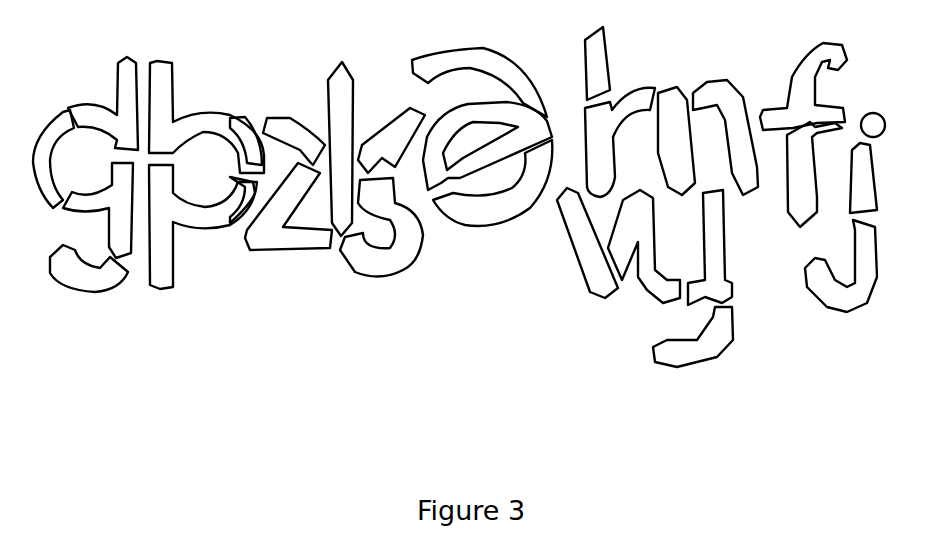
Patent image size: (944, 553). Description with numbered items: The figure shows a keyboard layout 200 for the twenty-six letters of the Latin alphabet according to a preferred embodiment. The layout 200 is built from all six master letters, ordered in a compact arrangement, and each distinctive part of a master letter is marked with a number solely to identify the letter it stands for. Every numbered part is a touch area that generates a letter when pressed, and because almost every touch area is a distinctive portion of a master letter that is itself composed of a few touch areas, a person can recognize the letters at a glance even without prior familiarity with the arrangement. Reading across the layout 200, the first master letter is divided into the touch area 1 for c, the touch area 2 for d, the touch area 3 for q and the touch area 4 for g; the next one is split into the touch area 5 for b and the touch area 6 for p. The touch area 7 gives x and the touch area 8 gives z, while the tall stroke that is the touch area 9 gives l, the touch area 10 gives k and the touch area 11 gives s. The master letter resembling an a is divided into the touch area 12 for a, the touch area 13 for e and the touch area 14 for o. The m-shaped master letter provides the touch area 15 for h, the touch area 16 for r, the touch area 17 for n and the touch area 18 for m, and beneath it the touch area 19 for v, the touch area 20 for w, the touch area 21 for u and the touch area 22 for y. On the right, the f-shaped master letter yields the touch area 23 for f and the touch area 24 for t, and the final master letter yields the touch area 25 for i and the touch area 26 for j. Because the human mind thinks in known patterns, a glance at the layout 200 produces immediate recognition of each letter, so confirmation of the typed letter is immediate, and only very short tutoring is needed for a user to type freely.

The touch area 1 is at (53, 159).
The touch area 2 is at (103, 103).
The touch area 3 is at (98, 210).
The touch area 4 is at (89, 268).
The touch area 5 is at (206, 117).
The touch area 6 is at (203, 227).
The touch area 7 is at (294, 141).
The touch area 8 is at (288, 206).
The touch area 9 is at (340, 149).
The touch area 10 is at (391, 140).
The touch area 11 is at (381, 227).
The touch area 12 is at (479, 82).
The touch area 13 is at (487, 146).
The touch area 14 is at (492, 183).
The touch area 15 is at (605, 63).
The touch area 16 is at (616, 142).
The touch area 17 is at (676, 141).
The touch area 18 is at (725, 137).
The touch area 19 is at (587, 243).
The touch area 20 is at (644, 246).
The touch area 21 is at (710, 247).
The touch area 22 is at (693, 337).
The touch area 23 is at (803, 72).
The touch area 24 is at (814, 174).
The touch area 25 is at (865, 178).
The touch area 26 is at (841, 266).
The layout 200 is at (459, 255).